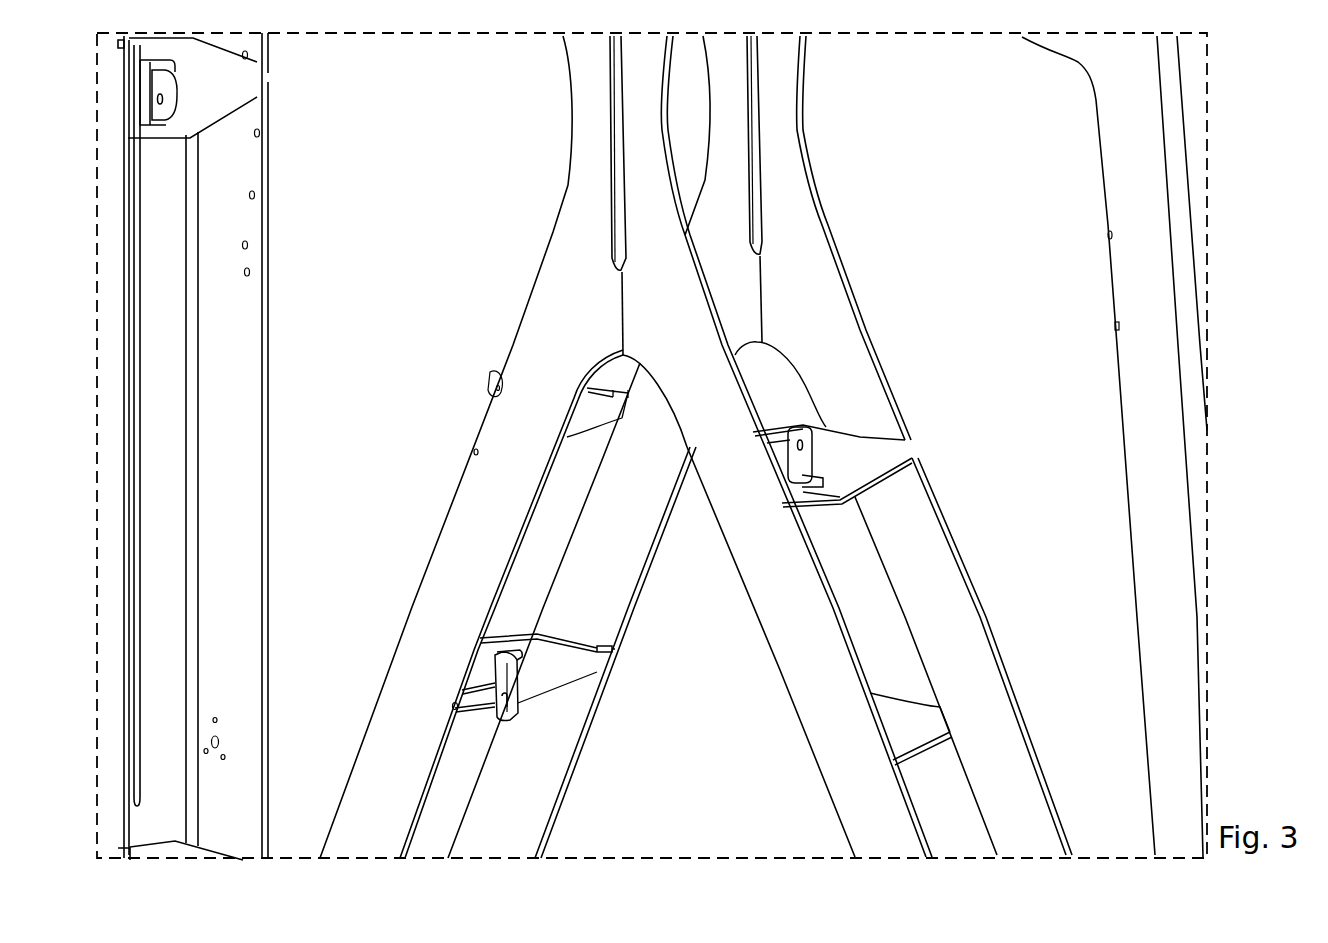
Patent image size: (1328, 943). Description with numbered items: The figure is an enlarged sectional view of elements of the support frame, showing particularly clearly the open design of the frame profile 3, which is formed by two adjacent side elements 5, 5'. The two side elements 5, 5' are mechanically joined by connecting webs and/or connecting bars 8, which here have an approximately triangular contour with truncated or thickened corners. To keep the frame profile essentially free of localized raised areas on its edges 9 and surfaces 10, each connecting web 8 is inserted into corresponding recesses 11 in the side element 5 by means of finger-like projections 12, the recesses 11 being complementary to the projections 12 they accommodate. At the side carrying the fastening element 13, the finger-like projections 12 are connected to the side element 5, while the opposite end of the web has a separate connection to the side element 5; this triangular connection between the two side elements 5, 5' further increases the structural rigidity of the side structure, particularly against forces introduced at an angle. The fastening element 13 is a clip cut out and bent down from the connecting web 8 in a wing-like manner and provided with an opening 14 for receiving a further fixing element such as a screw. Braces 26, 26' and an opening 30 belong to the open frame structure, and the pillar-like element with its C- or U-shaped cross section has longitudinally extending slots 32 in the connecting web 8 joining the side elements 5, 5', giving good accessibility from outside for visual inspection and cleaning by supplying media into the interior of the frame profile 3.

The frame profile 3 is at (628, 573).
The side element 5 is at (561, 447).
The side element 5' is at (719, 446).
The connecting web and/or connecting bar 8 is at (212, 93).
The edge 9 is at (623, 655).
The surface 10 is at (653, 573).
The recess 11 is at (473, 631).
The projection 12 is at (475, 639).
The fastening element 13 is at (500, 725).
The opening 14 is at (518, 730).
The brace 26 is at (629, 642).
The brace 26' is at (841, 460).
The opening 30 is at (618, 152).
The slot 32 is at (135, 207).